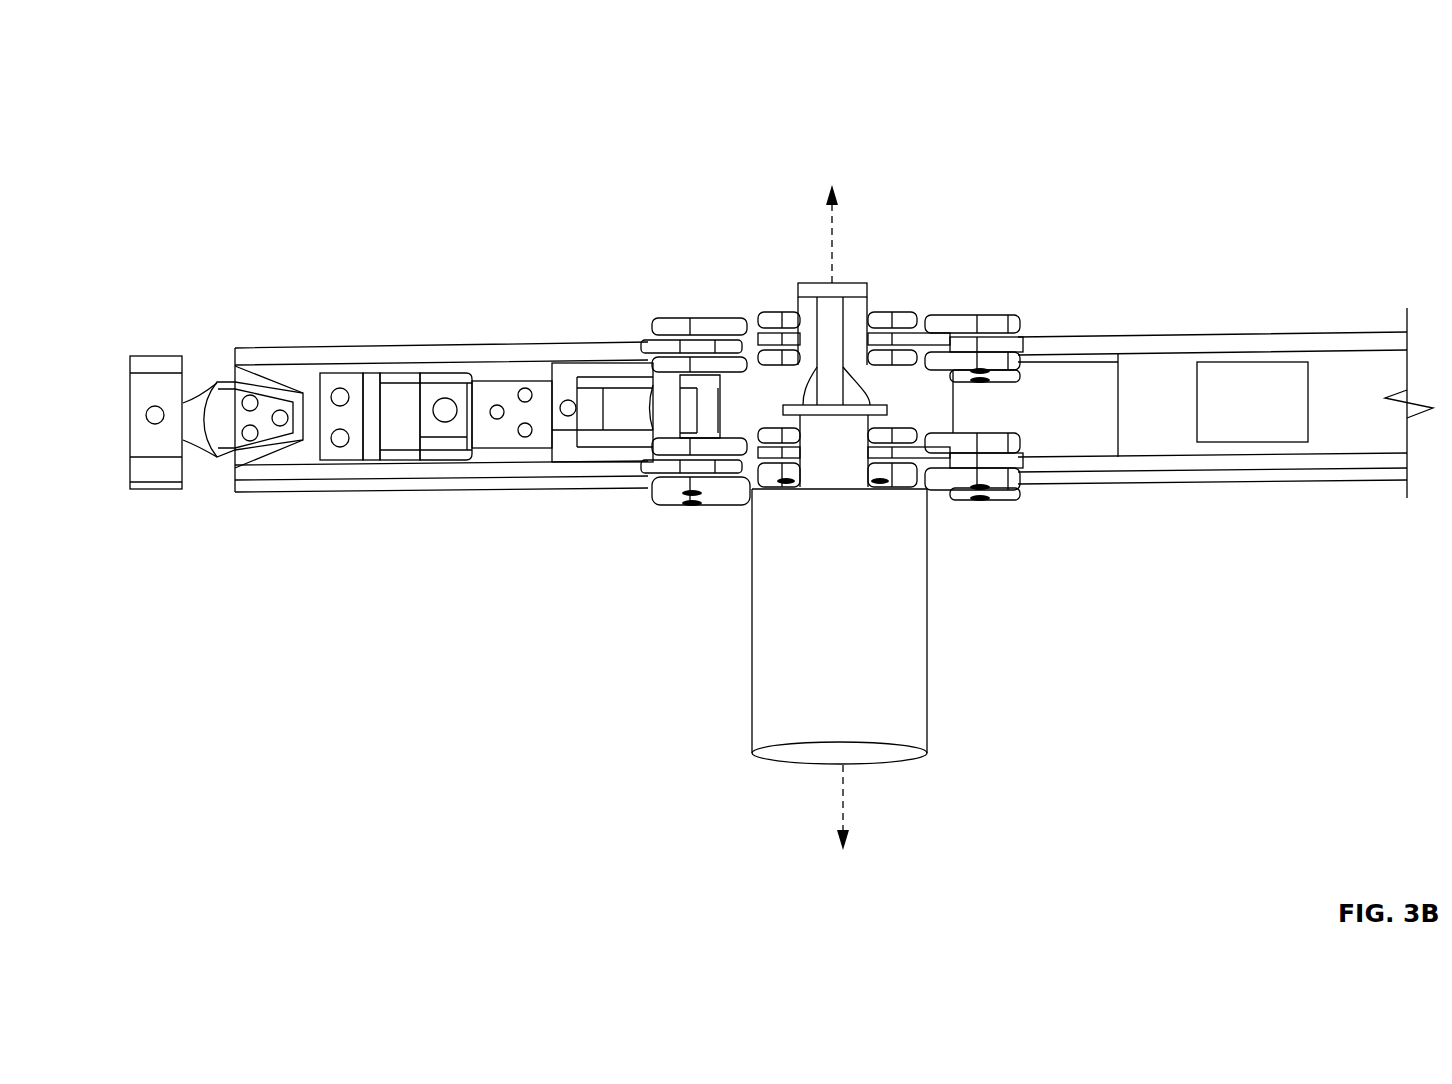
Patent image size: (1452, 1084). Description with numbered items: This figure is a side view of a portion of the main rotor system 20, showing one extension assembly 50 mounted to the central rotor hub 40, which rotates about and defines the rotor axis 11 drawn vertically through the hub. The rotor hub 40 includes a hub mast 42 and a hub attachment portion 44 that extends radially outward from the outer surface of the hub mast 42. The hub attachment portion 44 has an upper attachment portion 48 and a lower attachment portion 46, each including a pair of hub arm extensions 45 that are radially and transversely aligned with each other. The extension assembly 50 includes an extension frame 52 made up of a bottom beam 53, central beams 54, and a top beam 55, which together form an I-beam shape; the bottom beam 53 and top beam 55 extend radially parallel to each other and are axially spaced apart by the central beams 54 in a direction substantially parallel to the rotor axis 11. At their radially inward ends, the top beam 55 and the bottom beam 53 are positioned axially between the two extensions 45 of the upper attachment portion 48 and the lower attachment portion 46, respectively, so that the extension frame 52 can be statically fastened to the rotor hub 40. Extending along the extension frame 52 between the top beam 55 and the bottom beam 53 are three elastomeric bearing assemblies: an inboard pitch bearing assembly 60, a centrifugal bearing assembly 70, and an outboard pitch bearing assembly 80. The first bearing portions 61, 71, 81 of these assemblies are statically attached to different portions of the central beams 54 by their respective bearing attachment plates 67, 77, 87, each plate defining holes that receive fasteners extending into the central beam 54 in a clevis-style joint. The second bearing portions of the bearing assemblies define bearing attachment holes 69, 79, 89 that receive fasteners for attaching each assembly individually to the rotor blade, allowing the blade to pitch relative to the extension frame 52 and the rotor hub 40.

The main rotor system 20 is at (226, 110).
The rotor axis 11 is at (838, 232).
The central rotor hub 40 is at (800, 631).
The hub mast 42 is at (752, 722).
The hub attachment portion 44 is at (695, 497).
The hub arm extension 45 is at (1015, 372).
The lower attachment portion 46 is at (1005, 499).
The upper attachment portion 48 is at (974, 413).
The extension assembly 50 is at (400, 343).
The extension frame 52 is at (457, 343).
The bottom beam 53 is at (375, 492).
The central beam 54 is at (283, 463).
The top beam 55 is at (598, 346).
The inboard pitch bearing assembly 60 is at (602, 459).
The bearing attachment hole 69 is at (568, 418).
The centrifugal bearing assembly 70 is at (400, 460).
The bearing attachment hole 79 is at (450, 422).
The bearing attachment plate 77 is at (331, 379).
The first bearing portion 71 is at (337, 375).
The bearing attachment plate 67 is at (505, 366).
The first bearing portion 61 is at (512, 388).
The bearing attachment plate 87 is at (258, 361).
The first bearing portion 81 is at (255, 387).
The outboard pitch bearing assembly 80 is at (168, 462).
The bearing attachment hole 89 is at (155, 425).